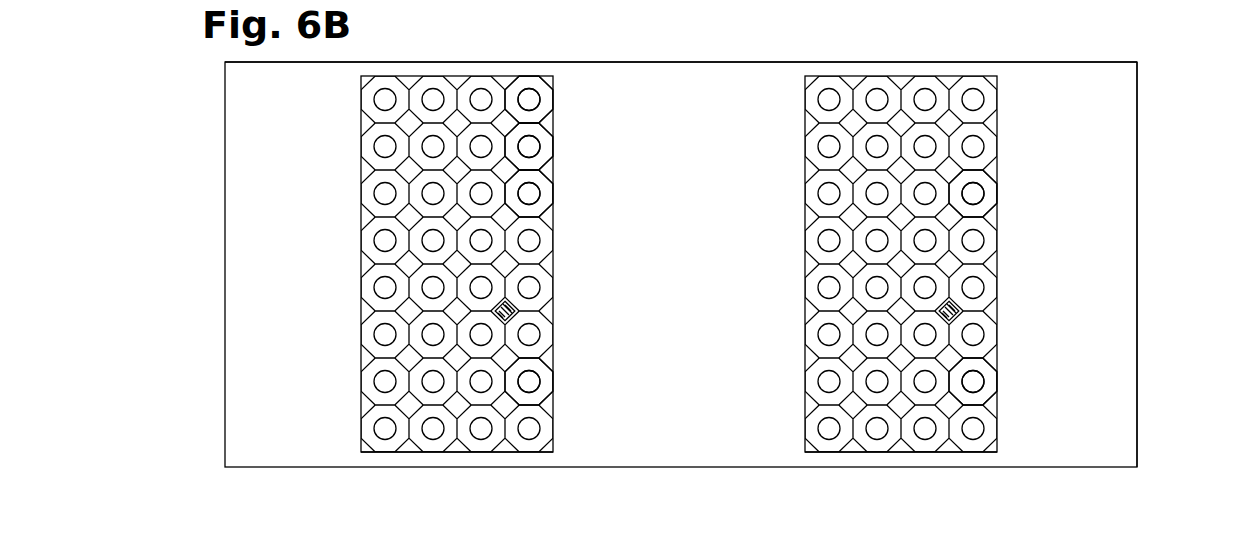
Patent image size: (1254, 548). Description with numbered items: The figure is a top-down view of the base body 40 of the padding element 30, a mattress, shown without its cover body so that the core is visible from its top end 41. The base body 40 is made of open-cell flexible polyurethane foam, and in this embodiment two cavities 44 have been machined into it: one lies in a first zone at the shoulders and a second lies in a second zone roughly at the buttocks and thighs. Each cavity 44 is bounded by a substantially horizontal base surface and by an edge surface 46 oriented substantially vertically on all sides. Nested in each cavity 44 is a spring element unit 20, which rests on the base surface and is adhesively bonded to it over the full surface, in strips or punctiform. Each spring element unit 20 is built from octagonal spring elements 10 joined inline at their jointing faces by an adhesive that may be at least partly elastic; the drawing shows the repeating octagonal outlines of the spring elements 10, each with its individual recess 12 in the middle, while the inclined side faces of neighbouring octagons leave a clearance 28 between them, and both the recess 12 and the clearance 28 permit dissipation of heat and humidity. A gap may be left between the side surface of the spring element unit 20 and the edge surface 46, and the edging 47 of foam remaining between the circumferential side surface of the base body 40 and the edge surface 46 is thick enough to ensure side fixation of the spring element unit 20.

The spring element 10 is at (548, 207).
The recess 12 is at (532, 381).
The spring element unit 20 is at (554, 172).
The clearance 28 is at (554, 258).
The padding element 30 is at (1145, 108).
The base body 40 is at (1105, 252).
The top end 41 is at (716, 88).
The cavity 44 is at (553, 77).
The edge surface 46 is at (555, 128).
The edging 47 is at (443, 455).